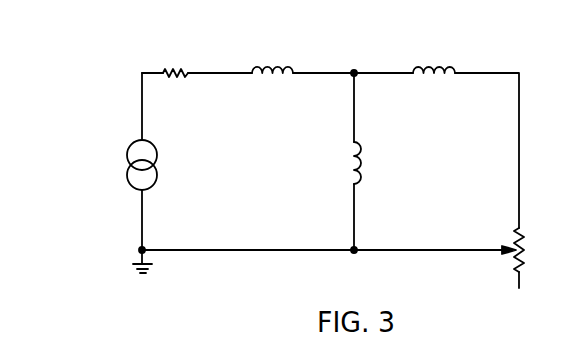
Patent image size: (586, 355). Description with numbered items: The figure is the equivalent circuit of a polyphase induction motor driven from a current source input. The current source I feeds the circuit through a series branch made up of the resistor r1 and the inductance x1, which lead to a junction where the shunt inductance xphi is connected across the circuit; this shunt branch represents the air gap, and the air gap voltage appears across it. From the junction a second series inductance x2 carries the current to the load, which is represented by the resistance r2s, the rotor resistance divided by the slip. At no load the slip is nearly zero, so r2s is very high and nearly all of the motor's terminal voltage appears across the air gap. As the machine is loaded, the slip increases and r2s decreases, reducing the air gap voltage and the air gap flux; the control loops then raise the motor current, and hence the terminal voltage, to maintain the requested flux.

The resistor r1 is at (175, 59).
The inductance x1 is at (272, 57).
The inductance x2 is at (434, 56).
The inductance xphi is at (371, 163).
The current source I is at (119, 138).
The load resistance r2s is at (547, 270).